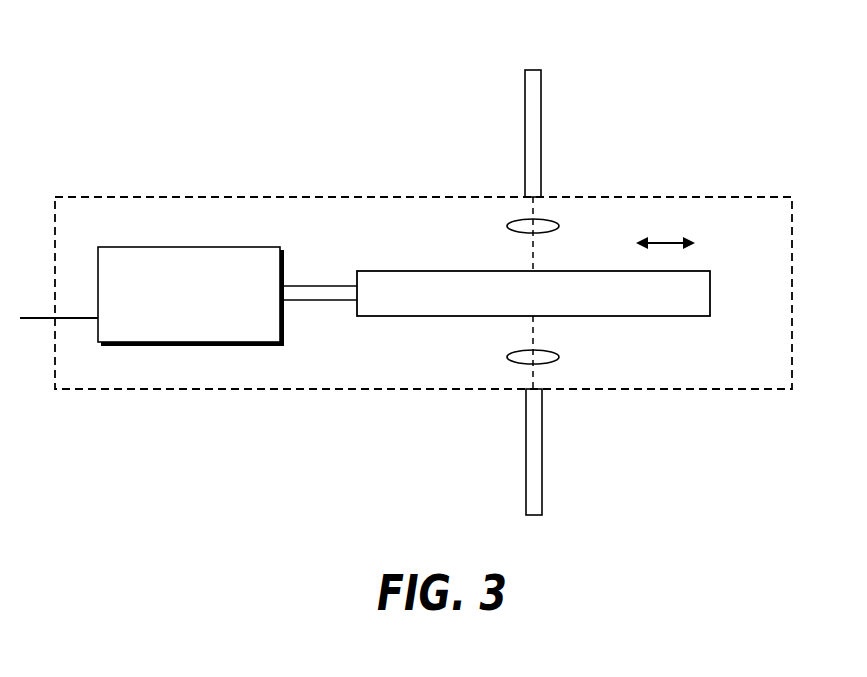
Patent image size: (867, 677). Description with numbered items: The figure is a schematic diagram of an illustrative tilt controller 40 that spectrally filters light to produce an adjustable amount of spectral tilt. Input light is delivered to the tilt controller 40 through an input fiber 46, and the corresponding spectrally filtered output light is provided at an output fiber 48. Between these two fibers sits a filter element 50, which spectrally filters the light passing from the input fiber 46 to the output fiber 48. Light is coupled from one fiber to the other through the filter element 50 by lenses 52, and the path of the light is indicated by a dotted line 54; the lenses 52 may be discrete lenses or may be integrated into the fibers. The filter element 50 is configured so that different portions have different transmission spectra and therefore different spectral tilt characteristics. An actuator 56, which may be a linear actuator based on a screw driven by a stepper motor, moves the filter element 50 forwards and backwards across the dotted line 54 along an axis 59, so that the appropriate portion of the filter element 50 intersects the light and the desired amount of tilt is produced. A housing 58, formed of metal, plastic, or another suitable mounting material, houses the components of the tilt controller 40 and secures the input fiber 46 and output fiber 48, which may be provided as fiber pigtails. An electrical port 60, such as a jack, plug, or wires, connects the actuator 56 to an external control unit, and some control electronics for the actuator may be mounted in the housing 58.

The tilt controller 40 is at (431, 74).
The input fiber 46 is at (566, 128).
The output fiber 48 is at (566, 451).
The filter element 50 is at (620, 317).
The lenses 52 is at (509, 226).
The dotted line 54 is at (534, 263).
The actuator 56 is at (193, 343).
The housing 58 is at (727, 390).
The axis 59 is at (662, 241).
The electrical port 60 is at (42, 317).